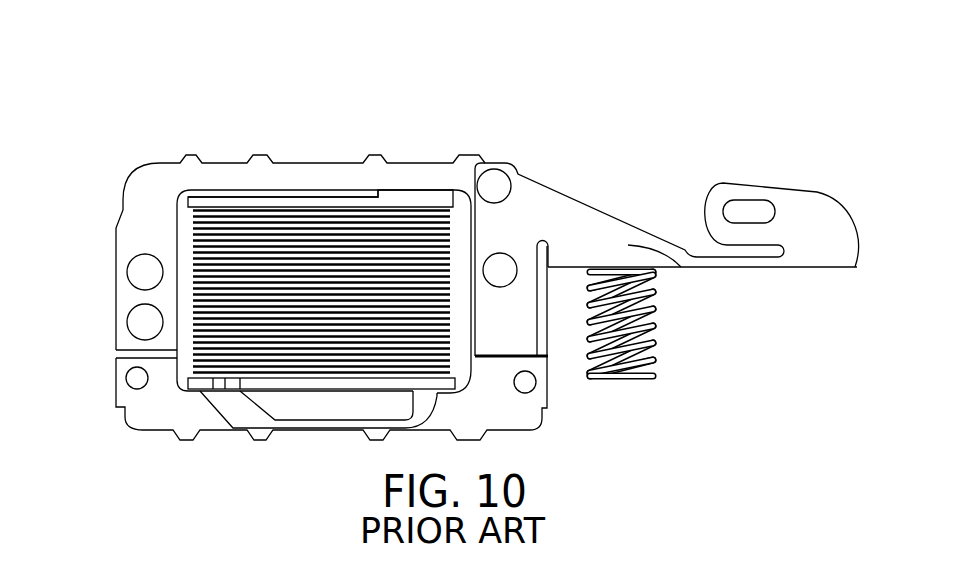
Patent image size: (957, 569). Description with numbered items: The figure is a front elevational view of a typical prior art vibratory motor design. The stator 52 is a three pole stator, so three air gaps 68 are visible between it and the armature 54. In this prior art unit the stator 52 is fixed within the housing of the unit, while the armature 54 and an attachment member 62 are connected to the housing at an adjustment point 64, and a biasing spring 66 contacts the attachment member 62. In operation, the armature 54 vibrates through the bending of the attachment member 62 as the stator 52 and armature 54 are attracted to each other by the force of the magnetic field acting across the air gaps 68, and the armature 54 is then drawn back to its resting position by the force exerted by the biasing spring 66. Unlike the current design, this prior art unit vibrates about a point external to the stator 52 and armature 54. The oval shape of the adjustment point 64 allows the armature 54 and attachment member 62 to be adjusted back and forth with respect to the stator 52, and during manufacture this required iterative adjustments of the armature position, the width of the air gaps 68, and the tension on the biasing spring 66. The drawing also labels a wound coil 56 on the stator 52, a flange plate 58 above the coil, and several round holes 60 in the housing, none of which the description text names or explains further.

The stator 52 is at (172, 420).
The armature 54 is at (162, 178).
The coil 56 is at (288, 205).
The yoke plate 58 is at (417, 200).
The mounting holes 60 is at (143, 320).
The attachment member 62 is at (608, 225).
The adjustment point 64 is at (748, 210).
The biasing spring 66 is at (650, 340).
The air gaps 68 is at (125, 353).